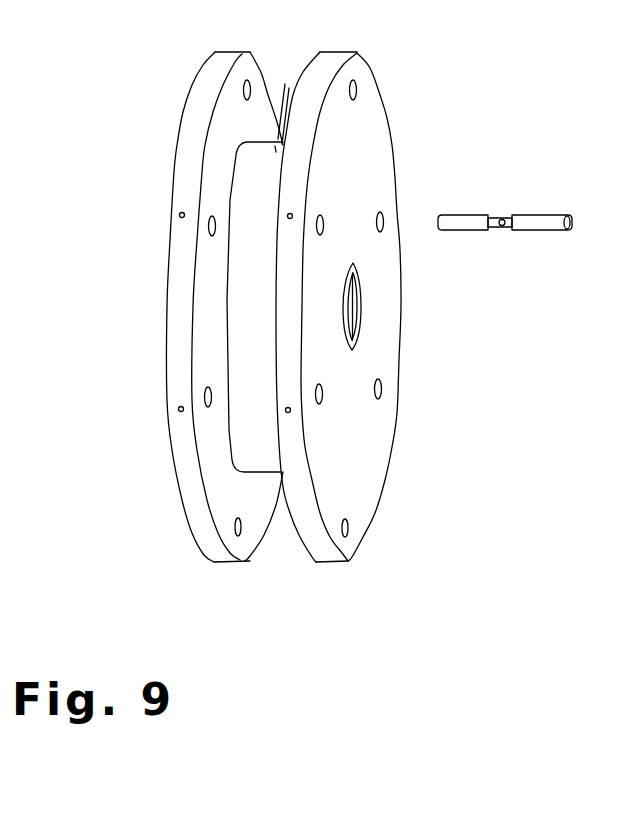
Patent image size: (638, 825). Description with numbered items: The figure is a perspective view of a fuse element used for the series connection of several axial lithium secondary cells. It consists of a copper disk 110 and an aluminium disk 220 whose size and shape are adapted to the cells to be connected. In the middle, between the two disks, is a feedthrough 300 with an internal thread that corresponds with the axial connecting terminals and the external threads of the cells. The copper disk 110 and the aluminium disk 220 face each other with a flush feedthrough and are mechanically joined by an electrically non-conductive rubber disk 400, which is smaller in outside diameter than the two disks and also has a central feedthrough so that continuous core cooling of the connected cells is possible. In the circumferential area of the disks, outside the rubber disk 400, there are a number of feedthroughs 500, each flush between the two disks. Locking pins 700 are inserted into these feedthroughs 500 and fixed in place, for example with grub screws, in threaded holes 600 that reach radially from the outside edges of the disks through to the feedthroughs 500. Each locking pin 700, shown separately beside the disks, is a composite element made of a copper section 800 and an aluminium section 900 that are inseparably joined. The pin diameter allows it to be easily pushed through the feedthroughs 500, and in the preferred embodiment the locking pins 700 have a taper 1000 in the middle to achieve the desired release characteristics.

The copper disk 110 is at (196, 105).
The aluminium disk 220 is at (380, 127).
The feedthrough 300 is at (363, 317).
The rubber disk 400 is at (286, 99).
The feedthroughs 500 is at (208, 232).
The threaded holes 600 is at (179, 217).
The locking pins 700 is at (506, 211).
The copper section 800 is at (470, 212).
The aluminium section 900 is at (542, 212).
The taper 1000 is at (500, 217).